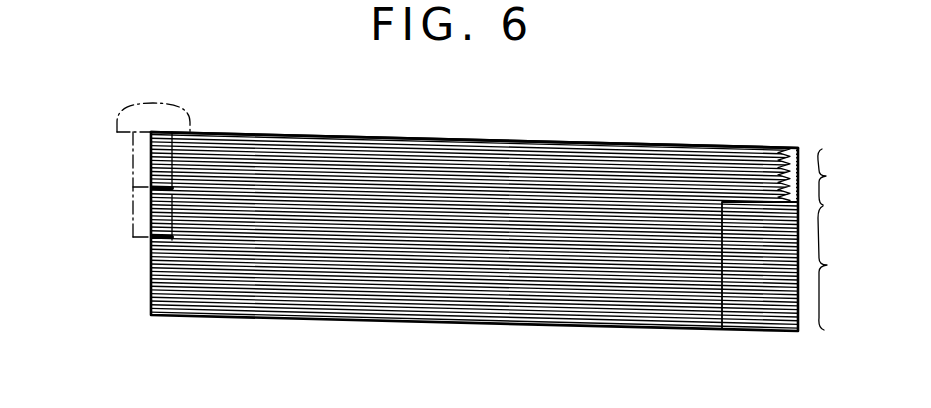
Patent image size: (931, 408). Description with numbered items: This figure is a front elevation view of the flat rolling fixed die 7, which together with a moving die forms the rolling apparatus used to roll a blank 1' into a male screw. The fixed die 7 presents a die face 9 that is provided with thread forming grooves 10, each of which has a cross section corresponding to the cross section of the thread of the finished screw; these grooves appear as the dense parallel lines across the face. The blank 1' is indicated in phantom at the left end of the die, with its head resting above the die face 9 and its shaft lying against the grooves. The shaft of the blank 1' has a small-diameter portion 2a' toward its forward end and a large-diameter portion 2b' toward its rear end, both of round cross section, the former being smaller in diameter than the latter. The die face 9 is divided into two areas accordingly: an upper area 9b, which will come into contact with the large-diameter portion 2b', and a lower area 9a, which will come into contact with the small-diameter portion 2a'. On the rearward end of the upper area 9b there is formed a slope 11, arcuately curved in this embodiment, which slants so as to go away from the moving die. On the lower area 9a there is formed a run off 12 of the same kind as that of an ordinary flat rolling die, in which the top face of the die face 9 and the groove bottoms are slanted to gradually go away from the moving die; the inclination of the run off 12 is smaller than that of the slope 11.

The blank 1' is at (153, 142).
The small-diameter portion 2a' is at (109, 211).
The large-diameter portion 2b' is at (109, 161).
The flat rolling fixed die 7 is at (329, 118).
The die face 9 is at (393, 303).
The area of the die face 9a is at (845, 268).
The area of the die face 9b is at (845, 177).
The thread forming grooves 10 is at (630, 152).
The slope 11 is at (786, 151).
The run off 12 is at (763, 320).